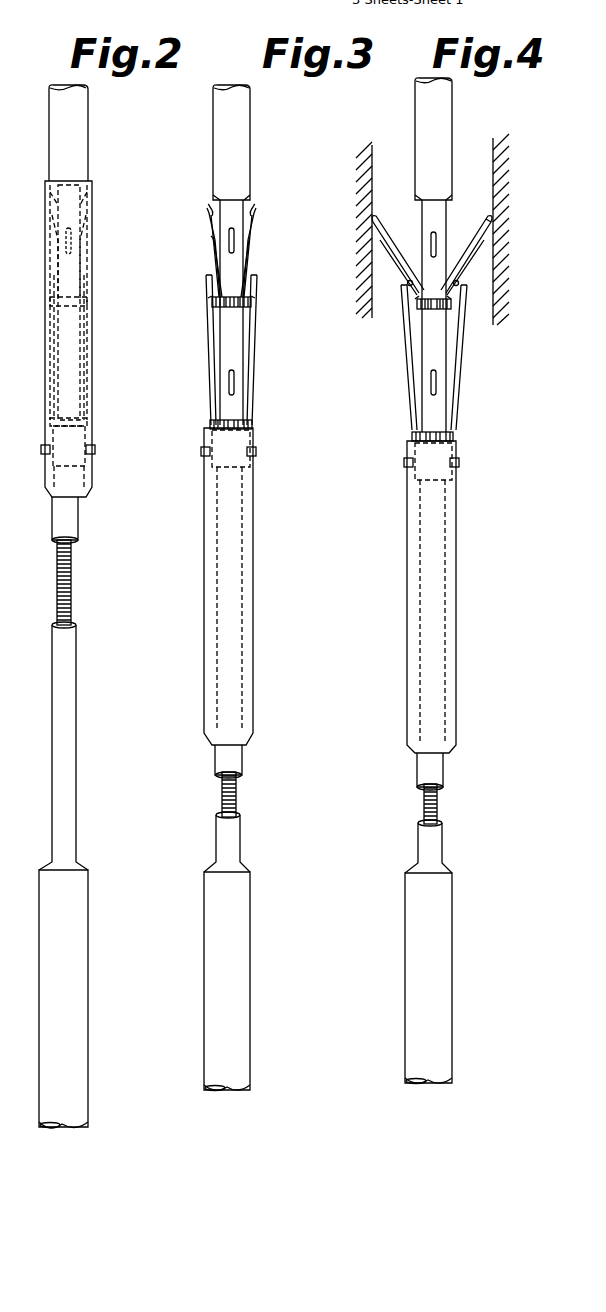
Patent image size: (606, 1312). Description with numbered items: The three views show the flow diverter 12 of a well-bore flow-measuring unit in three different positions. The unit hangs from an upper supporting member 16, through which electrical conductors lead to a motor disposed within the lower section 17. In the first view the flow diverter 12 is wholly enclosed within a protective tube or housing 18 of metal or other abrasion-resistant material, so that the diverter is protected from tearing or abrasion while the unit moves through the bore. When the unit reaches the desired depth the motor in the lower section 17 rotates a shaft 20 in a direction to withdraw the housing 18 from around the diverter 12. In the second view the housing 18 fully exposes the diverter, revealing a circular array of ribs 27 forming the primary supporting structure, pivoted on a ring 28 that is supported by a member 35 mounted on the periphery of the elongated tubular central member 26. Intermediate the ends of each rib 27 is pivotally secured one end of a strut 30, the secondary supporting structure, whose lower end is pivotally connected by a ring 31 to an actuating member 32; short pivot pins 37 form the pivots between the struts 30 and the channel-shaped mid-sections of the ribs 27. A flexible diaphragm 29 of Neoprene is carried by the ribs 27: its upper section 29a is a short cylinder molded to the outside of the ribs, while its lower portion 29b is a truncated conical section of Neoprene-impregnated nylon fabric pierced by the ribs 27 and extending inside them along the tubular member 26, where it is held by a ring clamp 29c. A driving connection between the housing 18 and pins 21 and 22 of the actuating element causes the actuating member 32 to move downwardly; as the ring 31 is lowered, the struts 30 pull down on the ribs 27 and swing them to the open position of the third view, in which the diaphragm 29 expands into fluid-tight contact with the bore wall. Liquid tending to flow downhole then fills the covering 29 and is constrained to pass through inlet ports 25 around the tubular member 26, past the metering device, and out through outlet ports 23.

In FIG. 2, the flow diverter 12 is at (82, 247).
In FIG. 3, the flow diverter 12 is at (259, 263).
In FIG. 4, the flow diverter 12 is at (403, 338).
In FIG. 2, the upper supporting member 16 is at (78, 131).
In FIG. 3, the upper supporting member 16 is at (237, 132).
In FIG. 4, the upper supporting member 16 is at (438, 132).
In FIG. 2, the lower section 17 is at (70, 994).
In FIG. 3, the lower section 17 is at (238, 984).
In FIG. 4, the lower section 17 is at (435, 1023).
In FIG. 2, the protective tube or housing 18 is at (92, 360).
In FIG. 3, the protective tube or housing 18 is at (254, 588).
In FIG. 4, the protective tube or housing 18 is at (456, 586).
In FIG. 2, the shaft 20 is at (71, 586).
In FIG. 3, the shaft 20 is at (237, 797).
In FIG. 4, the shaft 20 is at (438, 803).
In FIG. 2, the pin 21 is at (95, 450).
In FIG. 3, the pin 21 is at (256, 452).
In FIG. 4, the pin 21 is at (459, 462).
In FIG. 2, the pin 22 is at (41, 449).
In FIG. 3, the pin 22 is at (203, 454).
In FIG. 4, the pin 22 is at (404, 464).
In FIG. 3, the outlet ports or openings 23 is at (235, 383).
In FIG. 4, the outlet ports or openings 23 is at (437, 383).
In FIG. 3, the inlet ports or openings 25 is at (230, 243).
In FIG. 4, the inlet ports or openings 25 is at (436, 242).
In FIG. 2, the elongated tubular central member 26 is at (70, 796).
In FIG. 3, the elongated tubular central member 26 is at (221, 353).
In FIG. 4, the elongated tubular central member 26 is at (436, 845).
In FIG. 3, the rib 27 is at (213, 256).
In FIG. 4, the rib 27 is at (493, 231).
In FIG. 3, the ring 28 is at (214, 302).
In FIG. 4, the ring 28 is at (434, 304).
In FIG. 3, the flexible diaphragm 29 is at (258, 233).
In FIG. 4, the flexible diaphragm 29 is at (483, 246).
In FIG. 3, the upper section 29a is at (203, 208).
In FIG. 3, the lower portion 29b is at (216, 262).
In FIG. 4, the lower portion 29b is at (409, 262).
In FIG. 3, the ring clamp 29c is at (246, 294).
In FIG. 4, the ring clamp 29c is at (450, 296).
In FIG. 3, the strut 30 is at (208, 327).
In FIG. 4, the strut 30 is at (410, 377).
In FIG. 3, the ring 31 is at (252, 428).
In FIG. 4, the ring 31 is at (455, 436).
In FIG. 3, the actuating member 32 is at (222, 441).
In FIG. 4, the actuating member 32 is at (422, 448).
In FIG. 3, the member 35 is at (234, 306).
In FIG. 4, the member 35 is at (446, 310).
In FIG. 4, the pivot pin 37 is at (460, 283).